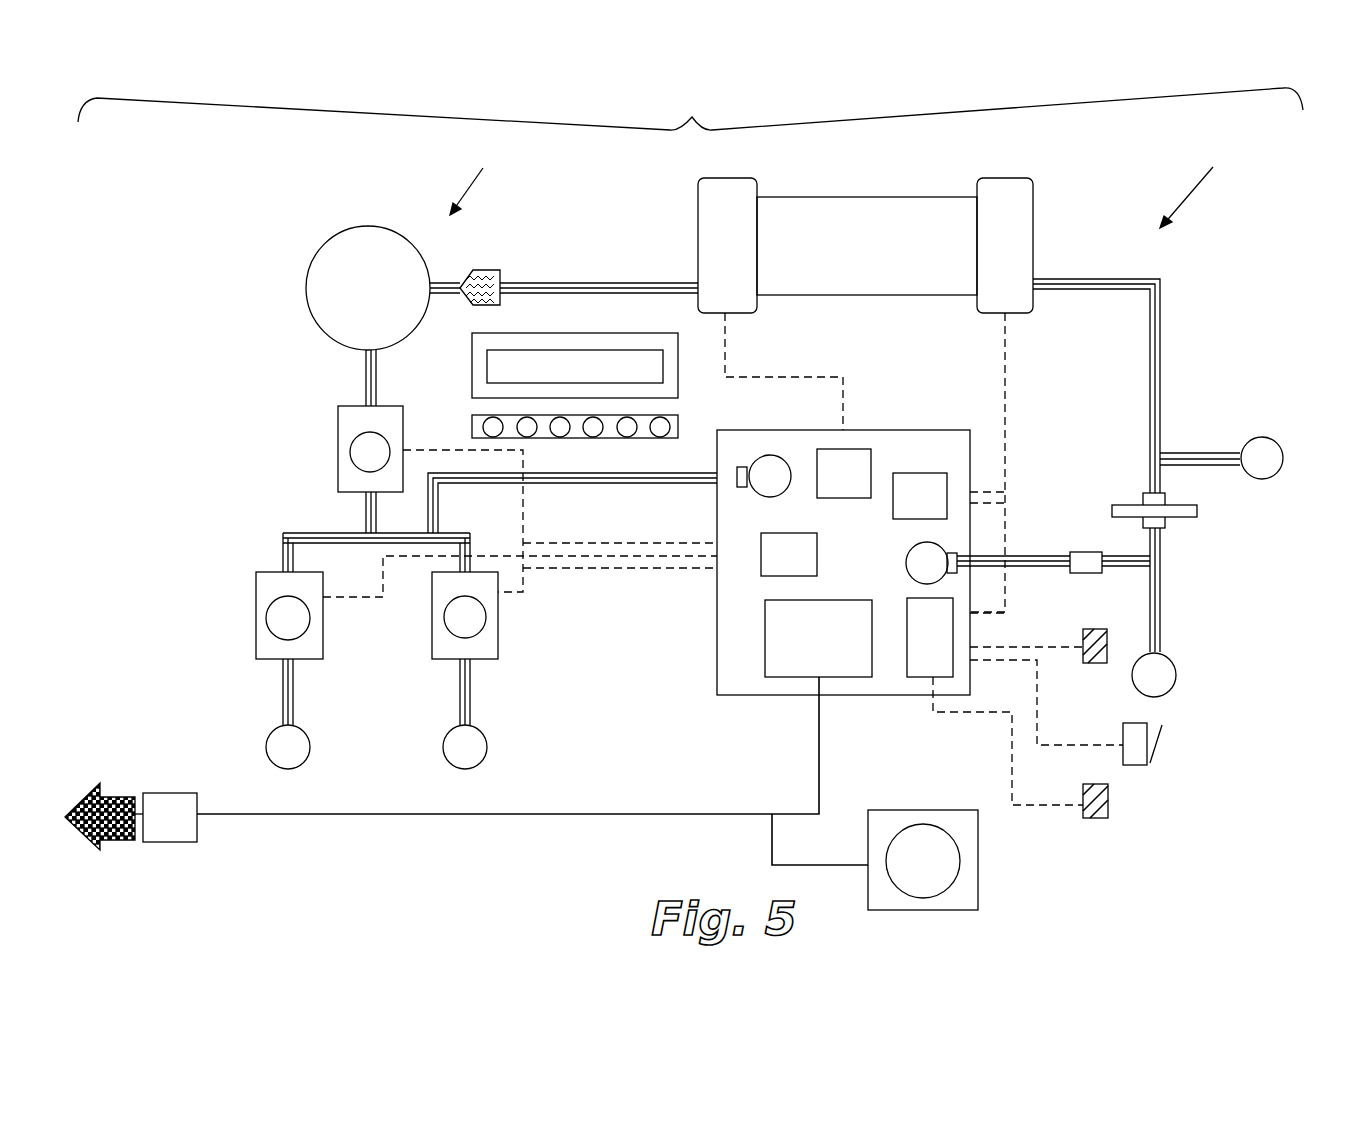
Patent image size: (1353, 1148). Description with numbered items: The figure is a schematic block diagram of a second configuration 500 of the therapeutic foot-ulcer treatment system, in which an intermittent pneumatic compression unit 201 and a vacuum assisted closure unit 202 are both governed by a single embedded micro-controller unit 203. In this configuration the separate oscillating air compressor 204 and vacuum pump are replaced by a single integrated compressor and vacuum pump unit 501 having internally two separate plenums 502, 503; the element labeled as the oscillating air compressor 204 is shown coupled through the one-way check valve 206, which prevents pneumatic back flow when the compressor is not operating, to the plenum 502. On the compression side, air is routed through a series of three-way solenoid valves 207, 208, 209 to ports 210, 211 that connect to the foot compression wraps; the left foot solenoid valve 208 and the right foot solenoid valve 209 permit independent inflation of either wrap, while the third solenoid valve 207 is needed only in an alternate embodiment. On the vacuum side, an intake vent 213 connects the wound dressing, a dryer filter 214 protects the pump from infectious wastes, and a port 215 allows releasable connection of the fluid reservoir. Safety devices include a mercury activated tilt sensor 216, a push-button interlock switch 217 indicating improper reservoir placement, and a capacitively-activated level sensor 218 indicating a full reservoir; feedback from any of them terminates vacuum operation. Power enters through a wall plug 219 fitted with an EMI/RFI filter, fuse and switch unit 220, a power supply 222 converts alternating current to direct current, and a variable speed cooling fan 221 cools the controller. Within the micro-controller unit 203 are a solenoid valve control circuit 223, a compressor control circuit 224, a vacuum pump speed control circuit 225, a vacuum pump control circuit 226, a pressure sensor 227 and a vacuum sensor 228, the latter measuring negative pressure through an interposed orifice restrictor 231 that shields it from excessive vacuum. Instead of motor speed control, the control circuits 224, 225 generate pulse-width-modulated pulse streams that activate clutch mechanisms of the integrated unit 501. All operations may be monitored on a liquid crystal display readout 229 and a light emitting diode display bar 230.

The second configuration 500 is at (690, 109).
The intermittent pneumatic compression unit 201 is at (481, 175).
The vacuum assisted closure unit 202 is at (1201, 185).
The embedded micro-controller unit 203 is at (880, 430).
The oscillating air compressor 204 is at (368, 288).
The one-way check valve 206 is at (485, 270).
The third solenoid valve 207 is at (338, 455).
The left foot solenoid valve 208 is at (256, 610).
The right foot solenoid valve 209 is at (432, 628).
The port 210 is at (266, 747).
The port 211 is at (487, 745).
The intake vent 213 is at (1283, 462).
The dryer filter 214 is at (1188, 517).
The port 215 is at (1176, 680).
The mercury activated tilt sensor 216 is at (1092, 629).
The push-button interlock switch 217 is at (1140, 765).
The capacitively-activated level sensor 218 is at (1108, 800).
The wall plug 219 is at (110, 785).
The EMI/RFI filter, fuse and switch unit 220 is at (170, 842).
The variable speed cooling fan 221 is at (978, 860).
The power supply 222 is at (818, 638).
The solenoid valve control circuit 223 is at (789, 554).
The compressor control circuit 224 is at (844, 473).
The vacuum pump speed control circuit 225 is at (920, 496).
The vacuum pump control circuit 226 is at (930, 637).
The pressure sensor 227 is at (770, 497).
The vacuum sensor 228 is at (906, 560).
The liquid crystal display readout 229 is at (472, 370).
The light emitting diode display bar 230 is at (472, 425).
The orifice restrictor 231 is at (1085, 552).
The integrated compressor and vacuum pump unit 501 is at (867, 246).
The plenum 502 is at (727, 245).
The plenum 503 is at (1005, 245).